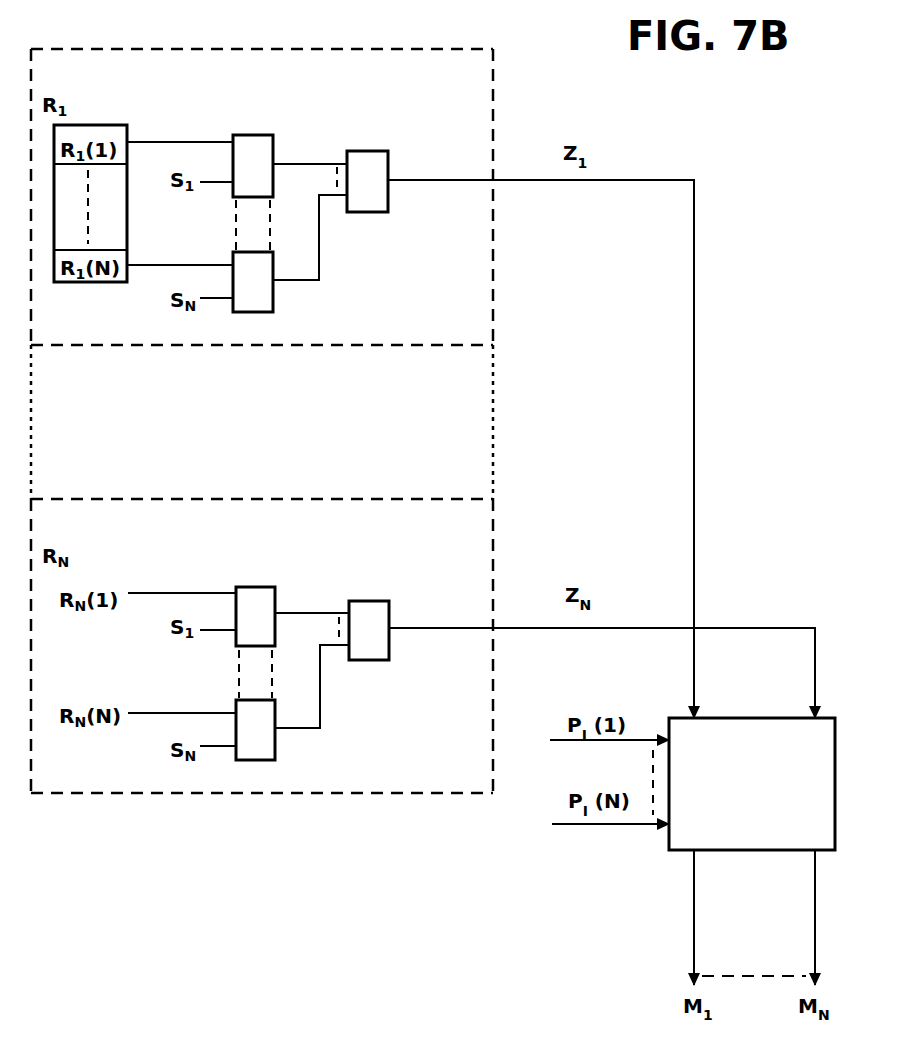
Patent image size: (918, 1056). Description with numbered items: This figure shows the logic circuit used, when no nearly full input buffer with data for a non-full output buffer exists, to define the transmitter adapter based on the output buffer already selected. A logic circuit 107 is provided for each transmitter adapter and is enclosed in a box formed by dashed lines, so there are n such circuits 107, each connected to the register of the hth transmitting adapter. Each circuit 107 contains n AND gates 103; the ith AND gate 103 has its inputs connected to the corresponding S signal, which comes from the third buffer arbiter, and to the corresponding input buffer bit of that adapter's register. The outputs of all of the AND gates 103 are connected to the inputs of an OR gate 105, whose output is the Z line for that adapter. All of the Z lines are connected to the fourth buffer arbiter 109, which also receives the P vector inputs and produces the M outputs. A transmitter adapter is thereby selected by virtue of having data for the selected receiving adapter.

The AND gates 103 is at (273, 135).
The OR gate 105 is at (370, 151).
The logic circuit 107 is at (385, 48).
The fourth buffer arbiter 109 is at (835, 718).